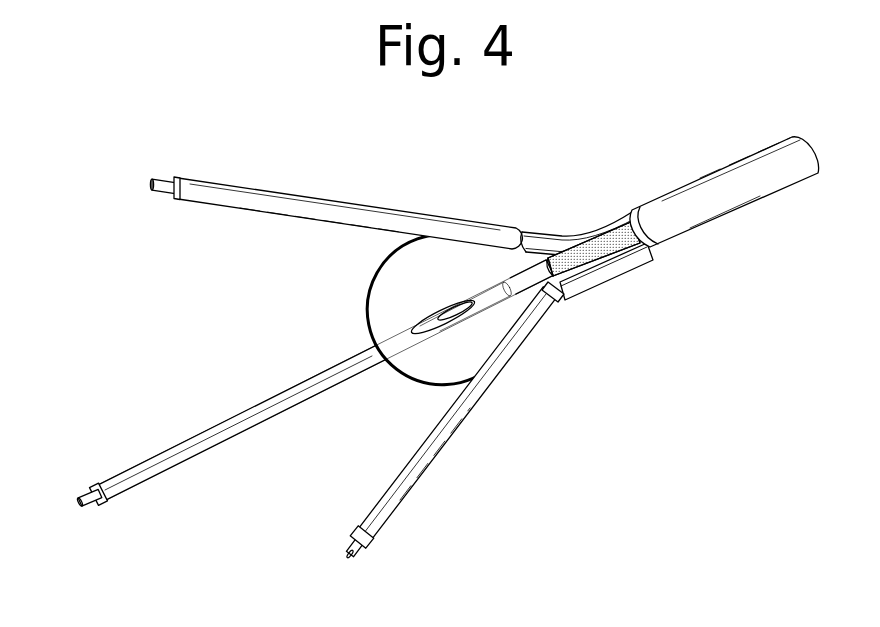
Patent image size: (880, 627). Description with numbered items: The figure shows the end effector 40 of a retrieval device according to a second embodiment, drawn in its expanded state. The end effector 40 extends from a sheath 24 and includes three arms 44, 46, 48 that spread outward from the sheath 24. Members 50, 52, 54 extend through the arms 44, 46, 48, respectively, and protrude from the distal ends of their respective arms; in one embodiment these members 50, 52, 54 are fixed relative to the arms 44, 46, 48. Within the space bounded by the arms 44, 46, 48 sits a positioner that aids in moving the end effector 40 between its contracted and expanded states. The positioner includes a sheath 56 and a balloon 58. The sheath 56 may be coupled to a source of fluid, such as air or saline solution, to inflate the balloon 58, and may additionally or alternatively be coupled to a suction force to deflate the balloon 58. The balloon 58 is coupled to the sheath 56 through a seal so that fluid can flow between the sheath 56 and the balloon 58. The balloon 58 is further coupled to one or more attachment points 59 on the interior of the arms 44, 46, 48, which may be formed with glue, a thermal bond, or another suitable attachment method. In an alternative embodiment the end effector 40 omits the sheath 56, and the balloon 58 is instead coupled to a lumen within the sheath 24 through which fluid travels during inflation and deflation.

The end effector 40 is at (96, 139).
The sheath 24 is at (721, 187).
The arm 44 is at (273, 197).
The arm 46 is at (210, 440).
The arm 48 is at (403, 487).
The member 50 is at (151, 184).
The member 52 is at (78, 502).
The member 54 is at (343, 557).
The sheath 56 is at (608, 227).
The balloon 58 is at (382, 292).
The attachment point 59 is at (443, 320).